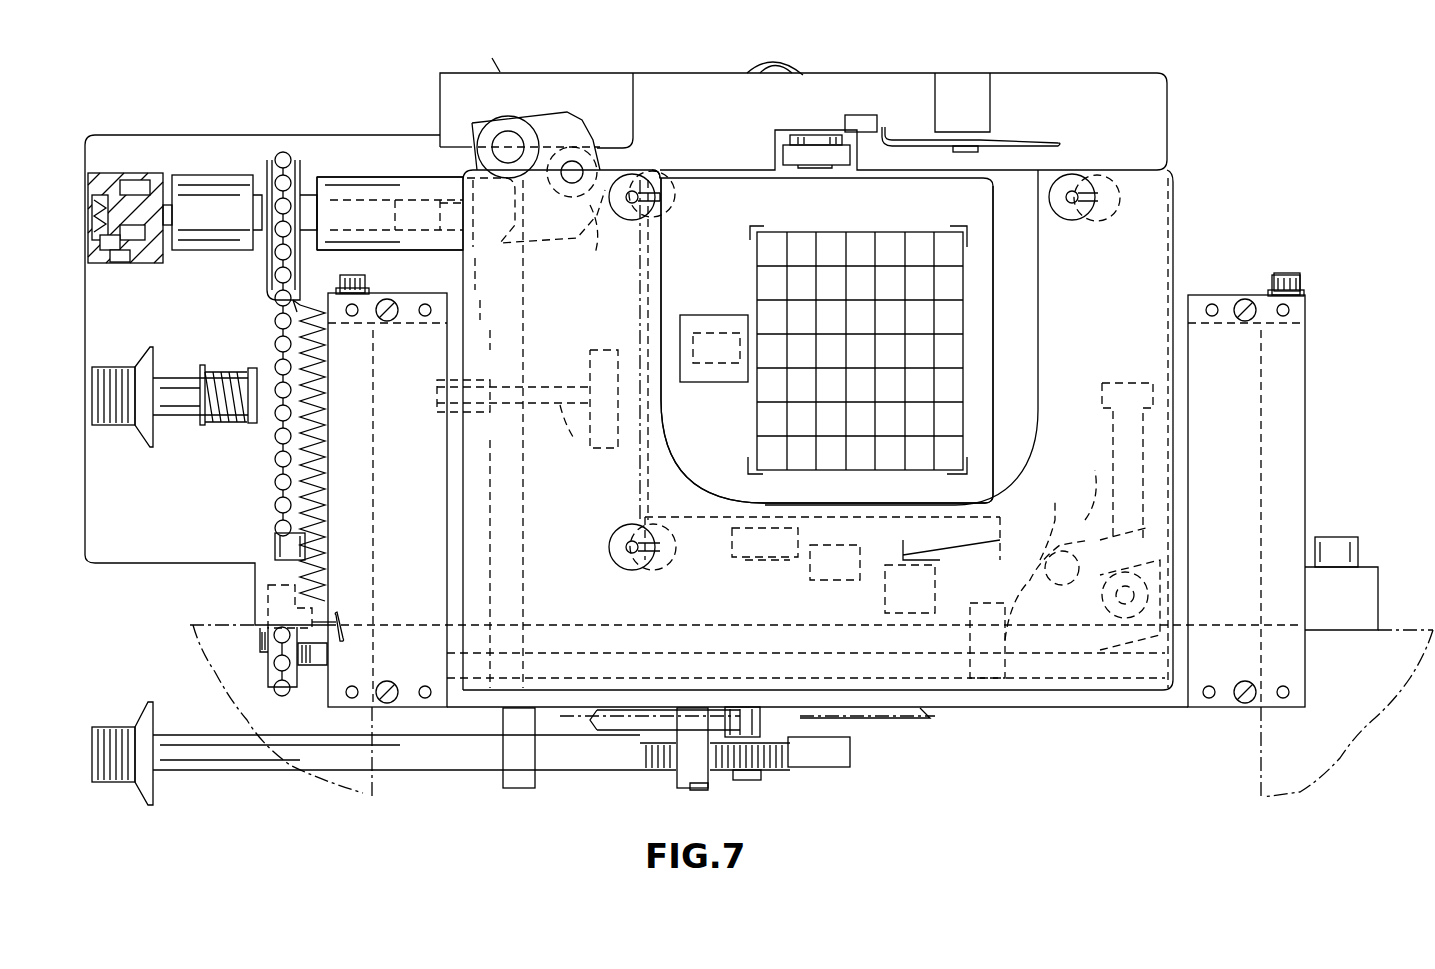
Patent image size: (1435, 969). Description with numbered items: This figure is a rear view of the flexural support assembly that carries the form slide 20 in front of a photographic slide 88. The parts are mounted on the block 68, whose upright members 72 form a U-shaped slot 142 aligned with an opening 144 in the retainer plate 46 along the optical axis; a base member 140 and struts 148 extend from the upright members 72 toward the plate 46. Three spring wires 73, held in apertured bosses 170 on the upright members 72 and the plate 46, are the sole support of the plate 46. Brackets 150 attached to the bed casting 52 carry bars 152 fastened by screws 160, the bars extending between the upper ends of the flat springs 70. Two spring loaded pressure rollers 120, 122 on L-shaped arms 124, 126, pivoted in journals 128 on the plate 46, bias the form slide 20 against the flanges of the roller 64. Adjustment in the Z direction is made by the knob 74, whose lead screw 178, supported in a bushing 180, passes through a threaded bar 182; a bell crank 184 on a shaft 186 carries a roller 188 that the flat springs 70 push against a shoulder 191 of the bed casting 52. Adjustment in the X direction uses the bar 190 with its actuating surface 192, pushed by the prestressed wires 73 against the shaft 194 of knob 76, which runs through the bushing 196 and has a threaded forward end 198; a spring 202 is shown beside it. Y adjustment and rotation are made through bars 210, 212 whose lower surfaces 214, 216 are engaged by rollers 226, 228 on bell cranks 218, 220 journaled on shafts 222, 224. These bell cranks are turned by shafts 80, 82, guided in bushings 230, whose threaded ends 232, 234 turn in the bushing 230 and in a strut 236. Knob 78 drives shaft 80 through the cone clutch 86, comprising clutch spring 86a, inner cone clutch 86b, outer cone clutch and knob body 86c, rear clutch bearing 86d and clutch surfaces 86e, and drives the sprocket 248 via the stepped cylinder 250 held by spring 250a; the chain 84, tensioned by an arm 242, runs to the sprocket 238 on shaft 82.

The form slide 20 is at (349, 142).
The retainer plate 46 is at (1084, 72).
The bed casting 52 is at (365, 797).
The roller 64 is at (786, 73).
The block 68 is at (523, 522).
The flat springs 70 is at (1300, 375).
The upright members 72 is at (603, 335).
The spring wires 73 is at (645, 177).
The knob 74 is at (120, 727).
The knob 76 is at (113, 366).
The knob 78 is at (110, 173).
The shaft 80 is at (390, 197).
The shaft 82 is at (320, 652).
The chain 84 is at (273, 500).
The cone clutch 86 is at (172, 170).
The clutch spring 86a is at (90, 192).
The inner cone clutch 86b is at (135, 240).
The outer cone clutch and knob body 86c is at (108, 172).
The rear clutch bearing 86d is at (95, 250).
The clutch surfaces 86e is at (128, 250).
The photographic slide 88 is at (1000, 225).
The pressure roller 120 is at (821, 145).
The pressure roller 122 is at (733, 560).
The L-shaped arm 124 is at (830, 585).
The L-shaped arm 126 is at (866, 117).
The journals 128 is at (970, 140).
The base member 140 is at (1057, 707).
The U-shaped slot 142 is at (1038, 272).
The opening 144 is at (728, 172).
The struts 148 is at (523, 580).
The brackets 150 is at (1368, 568).
The bars 152 is at (388, 295).
The screws 160 is at (1290, 275).
The apertured boss 170 is at (628, 218).
The lead screw 178 is at (658, 770).
The bushing 180 is at (525, 790).
The threaded bar 182 is at (695, 790).
The bell crank 184 is at (815, 768).
The shaft 186 is at (762, 771).
The roller 188 is at (850, 740).
The bar 190 is at (600, 350).
The shoulder 191 is at (910, 728).
The actuating surface 192 is at (590, 381).
The shaft 194 is at (188, 376).
The bushing 196 is at (505, 320).
The forward end 198 is at (590, 446).
The spring 202 is at (225, 422).
The bar 210 is at (634, 105).
The bar 212 is at (1152, 530).
The lower surface 214 is at (641, 156).
The lower surface 216 is at (1098, 470).
The bell crank 218 is at (580, 131).
The bell crank 220 is at (1080, 500).
The shaft 222 is at (515, 145).
The shaft 224 is at (1055, 530).
The roller 226 is at (1140, 592).
The roller 228 is at (595, 242).
The bushing 230 is at (372, 177).
The threaded end 232 is at (515, 210).
The threaded end 234 is at (1050, 566).
The strut 236 is at (978, 666).
The sprocket 238 is at (268, 668).
The arm 242 is at (262, 310).
The sprocket 248 is at (265, 160).
The stepped cylinder 250 is at (250, 178).
The spring 250a is at (318, 178).